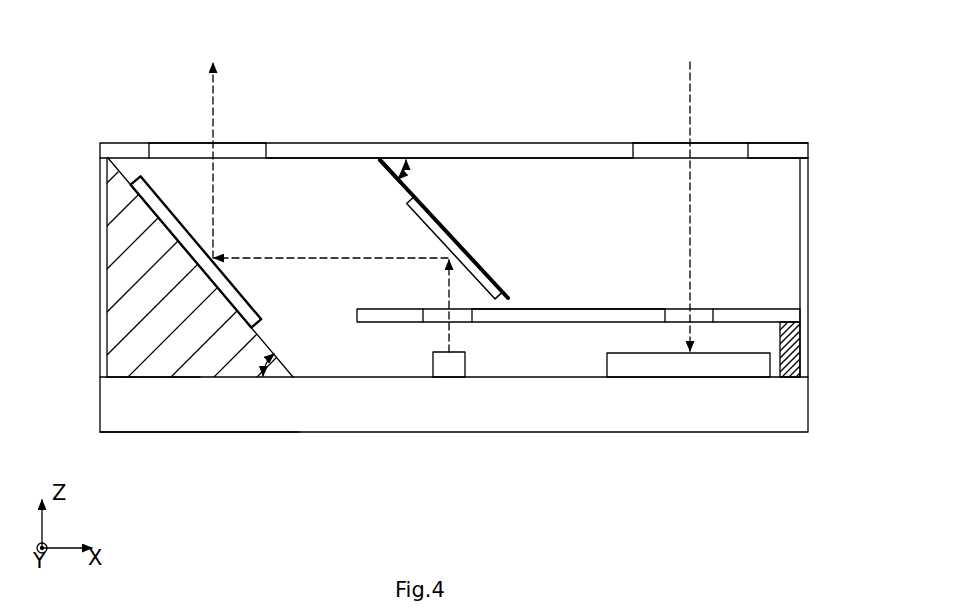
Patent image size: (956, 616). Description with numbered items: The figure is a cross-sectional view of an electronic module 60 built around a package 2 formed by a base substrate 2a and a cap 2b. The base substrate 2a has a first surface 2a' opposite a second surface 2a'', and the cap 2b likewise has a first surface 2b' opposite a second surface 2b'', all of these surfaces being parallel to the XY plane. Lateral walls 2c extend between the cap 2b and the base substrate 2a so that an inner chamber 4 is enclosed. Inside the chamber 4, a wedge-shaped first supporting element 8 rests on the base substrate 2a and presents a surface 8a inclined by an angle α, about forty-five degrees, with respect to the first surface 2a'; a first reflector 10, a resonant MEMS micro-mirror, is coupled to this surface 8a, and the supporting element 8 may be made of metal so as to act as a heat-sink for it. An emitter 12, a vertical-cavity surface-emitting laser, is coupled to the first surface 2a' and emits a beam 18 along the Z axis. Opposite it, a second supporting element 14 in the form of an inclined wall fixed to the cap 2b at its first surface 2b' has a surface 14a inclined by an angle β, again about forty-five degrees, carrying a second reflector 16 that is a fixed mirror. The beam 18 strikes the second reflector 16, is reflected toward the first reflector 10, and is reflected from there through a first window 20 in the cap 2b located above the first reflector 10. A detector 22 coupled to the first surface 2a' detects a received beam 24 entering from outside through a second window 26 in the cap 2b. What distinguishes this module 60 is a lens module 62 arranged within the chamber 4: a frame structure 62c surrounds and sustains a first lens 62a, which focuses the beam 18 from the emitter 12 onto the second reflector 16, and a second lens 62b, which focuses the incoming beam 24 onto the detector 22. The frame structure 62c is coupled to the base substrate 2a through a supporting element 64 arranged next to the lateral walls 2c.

The electronic module 60 is at (453, 287).
The package 2 is at (453, 265).
The base substrate 2a is at (416, 404).
The first surface of the base substrate 2a' is at (114, 356).
The second surface of the base substrate 2a'' is at (200, 458).
The cap 2b is at (450, 118).
The first surface of the cap 2b' is at (814, 178).
The second surface of the cap 2b'' is at (807, 123).
The lateral walls 2c is at (100, 289).
The inner chamber 4 is at (742, 268).
The first supporting element 8 is at (352, 287).
The surface of the first supporting element 8a is at (290, 356).
The first reflector 10 is at (244, 303).
The emitter 12 is at (447, 363).
The second supporting element 14 is at (415, 185).
The surface of the second supporting element 14a is at (381, 170).
The second reflector 16 is at (432, 236).
The beam 18 is at (214, 90).
The first window 20 is at (192, 148).
The detector 22 is at (615, 365).
The received beam 24 is at (688, 107).
The second window 26 is at (722, 148).
The lens module 62 is at (566, 282).
The first lens 62a is at (435, 316).
The second lens 62b is at (673, 318).
The frame structure 62c is at (540, 308).
The supporting element 64 is at (790, 352).